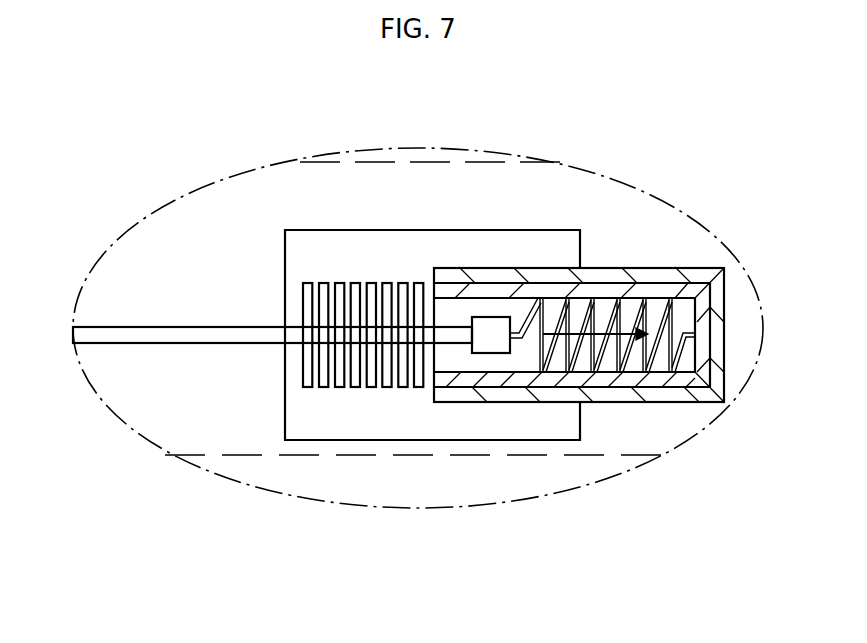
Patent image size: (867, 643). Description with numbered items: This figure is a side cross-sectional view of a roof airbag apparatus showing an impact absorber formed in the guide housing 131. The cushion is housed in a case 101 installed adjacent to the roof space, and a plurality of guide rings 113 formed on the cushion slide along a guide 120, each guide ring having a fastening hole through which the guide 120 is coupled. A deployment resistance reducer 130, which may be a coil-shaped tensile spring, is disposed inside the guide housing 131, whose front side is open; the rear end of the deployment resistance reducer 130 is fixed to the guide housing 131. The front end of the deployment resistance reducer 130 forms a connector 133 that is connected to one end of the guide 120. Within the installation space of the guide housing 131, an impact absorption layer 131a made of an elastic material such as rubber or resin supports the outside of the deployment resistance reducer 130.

The case 101 is at (412, 253).
The guide rings 113 is at (340, 387).
The guide 120 is at (175, 327).
The deployment resistance reducer 130 is at (647, 356).
The guide housing 131 is at (603, 278).
The impact absorption layer 131a is at (690, 288).
The connector 133 is at (506, 336).